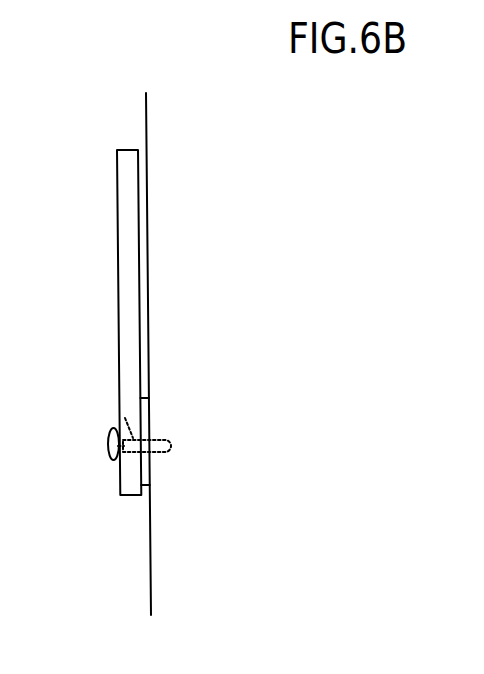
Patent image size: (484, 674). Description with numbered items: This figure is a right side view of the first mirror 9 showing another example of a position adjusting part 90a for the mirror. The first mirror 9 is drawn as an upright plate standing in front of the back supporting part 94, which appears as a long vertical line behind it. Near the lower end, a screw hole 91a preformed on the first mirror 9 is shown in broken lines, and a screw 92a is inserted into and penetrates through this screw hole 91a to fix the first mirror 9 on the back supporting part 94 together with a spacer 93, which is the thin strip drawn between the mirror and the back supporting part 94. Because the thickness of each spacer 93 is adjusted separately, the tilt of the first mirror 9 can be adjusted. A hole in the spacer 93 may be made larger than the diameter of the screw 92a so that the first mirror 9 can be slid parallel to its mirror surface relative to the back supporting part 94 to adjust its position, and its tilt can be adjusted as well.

The first mirror 9 is at (116, 230).
The back supporting part 94 is at (148, 200).
The spacer 93 is at (149, 412).
The screw 92a is at (109, 456).
The screw hole 91a is at (115, 427).
The position adjusting part 90a is at (233, 519).